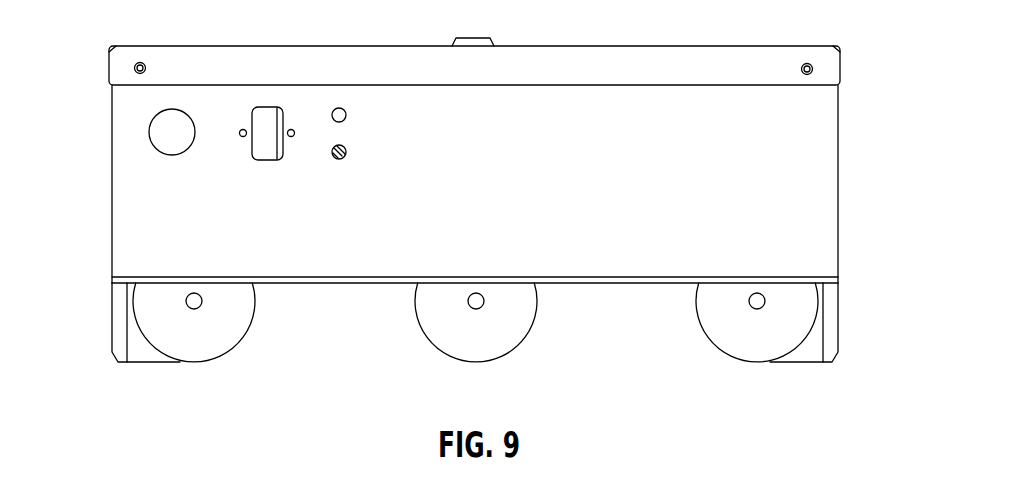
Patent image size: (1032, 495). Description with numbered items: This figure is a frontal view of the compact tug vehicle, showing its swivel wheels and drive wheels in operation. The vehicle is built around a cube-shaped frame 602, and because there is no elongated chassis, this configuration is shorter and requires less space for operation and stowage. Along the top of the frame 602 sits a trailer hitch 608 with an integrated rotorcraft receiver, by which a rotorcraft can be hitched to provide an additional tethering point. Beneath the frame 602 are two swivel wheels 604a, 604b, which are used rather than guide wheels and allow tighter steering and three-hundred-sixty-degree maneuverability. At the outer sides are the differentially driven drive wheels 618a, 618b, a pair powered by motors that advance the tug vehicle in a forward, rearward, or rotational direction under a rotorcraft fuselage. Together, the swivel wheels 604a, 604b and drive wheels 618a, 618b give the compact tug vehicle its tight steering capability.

The cube-shaped frame 602 is at (822, 152).
The trailer hitch 608 is at (473, 37).
The swivel wheel 604a is at (230, 350).
The swivel wheel 604b is at (710, 343).
The drive wheel 618a is at (118, 327).
The drive wheel 618b is at (830, 315).